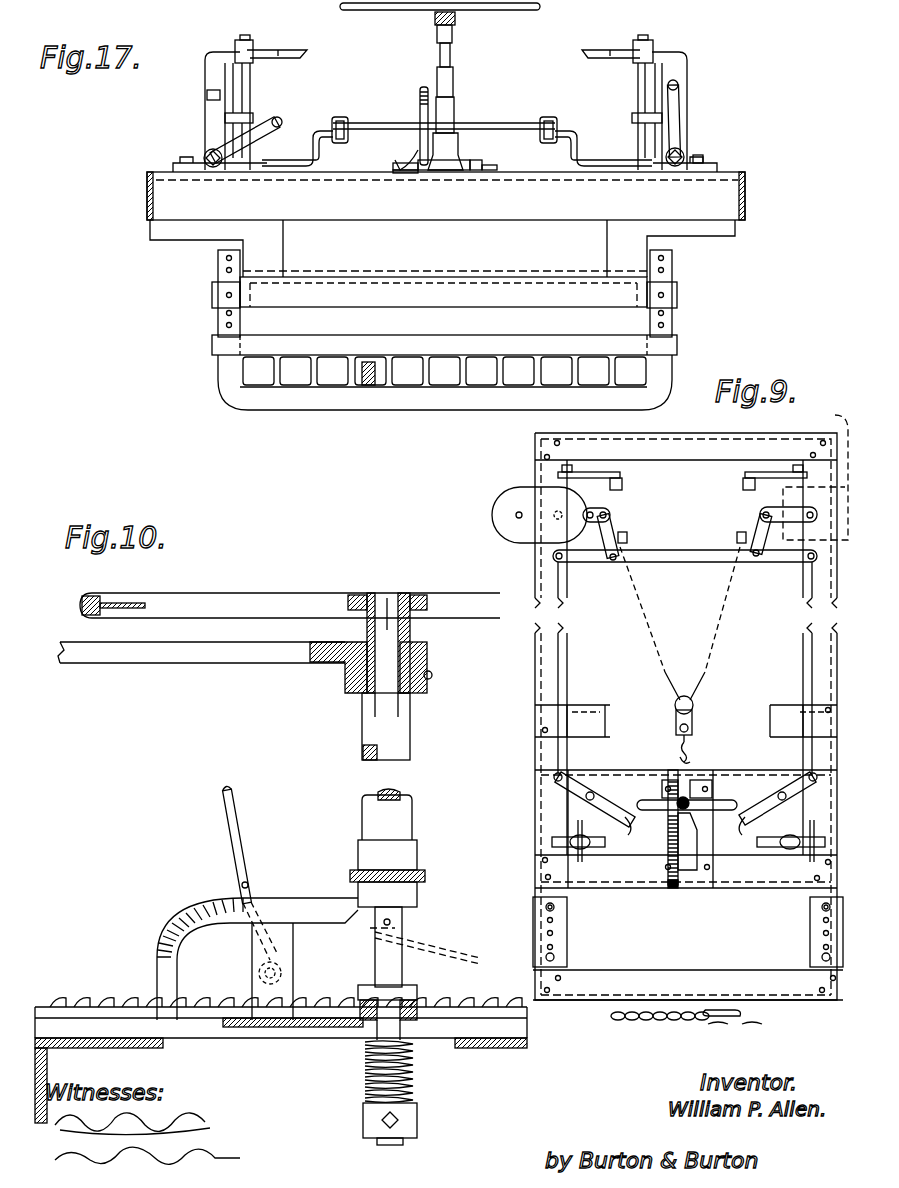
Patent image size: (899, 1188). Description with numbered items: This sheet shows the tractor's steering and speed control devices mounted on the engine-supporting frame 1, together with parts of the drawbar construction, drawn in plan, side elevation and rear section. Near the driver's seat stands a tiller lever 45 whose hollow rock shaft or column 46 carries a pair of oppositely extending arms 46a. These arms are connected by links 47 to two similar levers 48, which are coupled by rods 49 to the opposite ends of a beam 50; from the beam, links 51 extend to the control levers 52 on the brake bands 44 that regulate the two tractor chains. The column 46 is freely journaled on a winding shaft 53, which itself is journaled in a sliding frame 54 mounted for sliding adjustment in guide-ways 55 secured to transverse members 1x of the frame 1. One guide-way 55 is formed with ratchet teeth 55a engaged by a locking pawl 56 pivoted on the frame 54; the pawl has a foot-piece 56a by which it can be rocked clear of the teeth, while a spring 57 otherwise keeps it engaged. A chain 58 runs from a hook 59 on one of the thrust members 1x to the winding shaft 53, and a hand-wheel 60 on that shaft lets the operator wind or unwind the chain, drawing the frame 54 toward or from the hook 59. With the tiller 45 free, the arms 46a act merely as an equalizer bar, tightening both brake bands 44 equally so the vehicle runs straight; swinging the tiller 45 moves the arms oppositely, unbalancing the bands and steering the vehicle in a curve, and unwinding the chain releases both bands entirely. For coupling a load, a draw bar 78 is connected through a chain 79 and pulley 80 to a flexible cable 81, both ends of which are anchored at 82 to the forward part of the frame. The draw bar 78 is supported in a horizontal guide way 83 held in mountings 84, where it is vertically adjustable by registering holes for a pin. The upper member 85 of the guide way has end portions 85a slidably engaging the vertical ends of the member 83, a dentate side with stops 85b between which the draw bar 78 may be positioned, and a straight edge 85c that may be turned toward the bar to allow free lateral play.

In FIG. 17, the frame 1 is at (147, 190).
In FIG. 9, the frame 1 is at (535, 652).
In FIG. 17, the transverse members 1x is at (345, 222).
In FIG. 9, the transverse members 1x is at (590, 910).
In FIG. 10, the transverse members 1x is at (520, 1050).
In FIG. 9, the brake bands 44 is at (495, 505).
In FIG. 17, the tiller lever 45 is at (435, 20).
In FIG. 10, the tiller lever 45 is at (225, 662).
In FIG. 17, the hollow rock shaft or column 46 is at (452, 42).
In FIG. 9, the hollow rock shaft or column 46 is at (686, 797).
In FIG. 10, the hollow rock shaft or column 46 is at (362, 700).
In FIG. 17, the oppositely extending arms 46a is at (503, 143).
In FIG. 9, the oppositely extending arms 46a is at (733, 790).
In FIG. 10, the oppositely extending arms 46a is at (412, 865).
In FIG. 17, the links 47 is at (340, 117).
In FIG. 9, the links 47 is at (688, 841).
In FIG. 17, the levers 48 is at (312, 131).
In FIG. 9, the levers 48 is at (548, 787).
In FIG. 9, the rods 49 is at (567, 668).
In FIG. 9, the beam 50 is at (595, 562).
In FIG. 9, the links 51 is at (615, 530).
In FIG. 9, the control levers 52 is at (610, 510).
In FIG. 17, the winding shaft 53 is at (440, 59).
In FIG. 9, the winding shaft 53 is at (690, 810).
In FIG. 10, the winding shaft 53 is at (410, 707).
In FIG. 17, the sliding frame 54 is at (445, 170).
In FIG. 9, the sliding frame 54 is at (688, 870).
In FIG. 10, the sliding frame 54 is at (280, 898).
In FIG. 17, the guide-ways 55 is at (405, 172).
In FIG. 9, the guide-ways 55 is at (713, 870).
In FIG. 10, the guide-ways 55 is at (238, 1038).
In FIG. 17, the ratchet teeth 55a is at (395, 172).
In FIG. 9, the ratchet teeth 55a is at (672, 888).
In FIG. 10, the ratchet teeth 55a is at (130, 998).
In FIG. 17, the locking pawl 56 is at (418, 150).
In FIG. 10, the locking pawl 56 is at (250, 978).
In FIG. 17, the foot-piece 56a is at (420, 105).
In FIG. 9, the foot-piece 56a is at (666, 840).
In FIG. 10, the foot-piece 56a is at (230, 808).
In FIG. 10, the spring 57 is at (225, 898).
In FIG. 9, the chain 58 is at (639, 1017).
In FIG. 10, the chain 58 is at (425, 950).
In FIG. 9, the hook 59 is at (742, 1010).
In FIG. 17, the hand-wheel 60 is at (340, 6).
In FIG. 10, the hand-wheel 60 is at (245, 600).
In FIG. 17, the draw bar 78 is at (368, 386).
In FIG. 9, the chain 79 is at (690, 750).
In FIG. 9, the pulley 80 is at (693, 706).
In FIG. 9, the flexible cable 81 is at (705, 610).
In FIG. 9, the anchorage 82 is at (737, 537).
In FIG. 17, the horizontal guide way 83 is at (497, 410).
In FIG. 17, the mountings 84 is at (212, 294).
In FIG. 17, the upper member of the guide way 85 is at (418, 345).
In FIG. 17, the end portions 85a is at (698, 340).
In FIG. 17, the stops 85b is at (347, 385).
In FIG. 17, the straight edge 85c is at (530, 336).